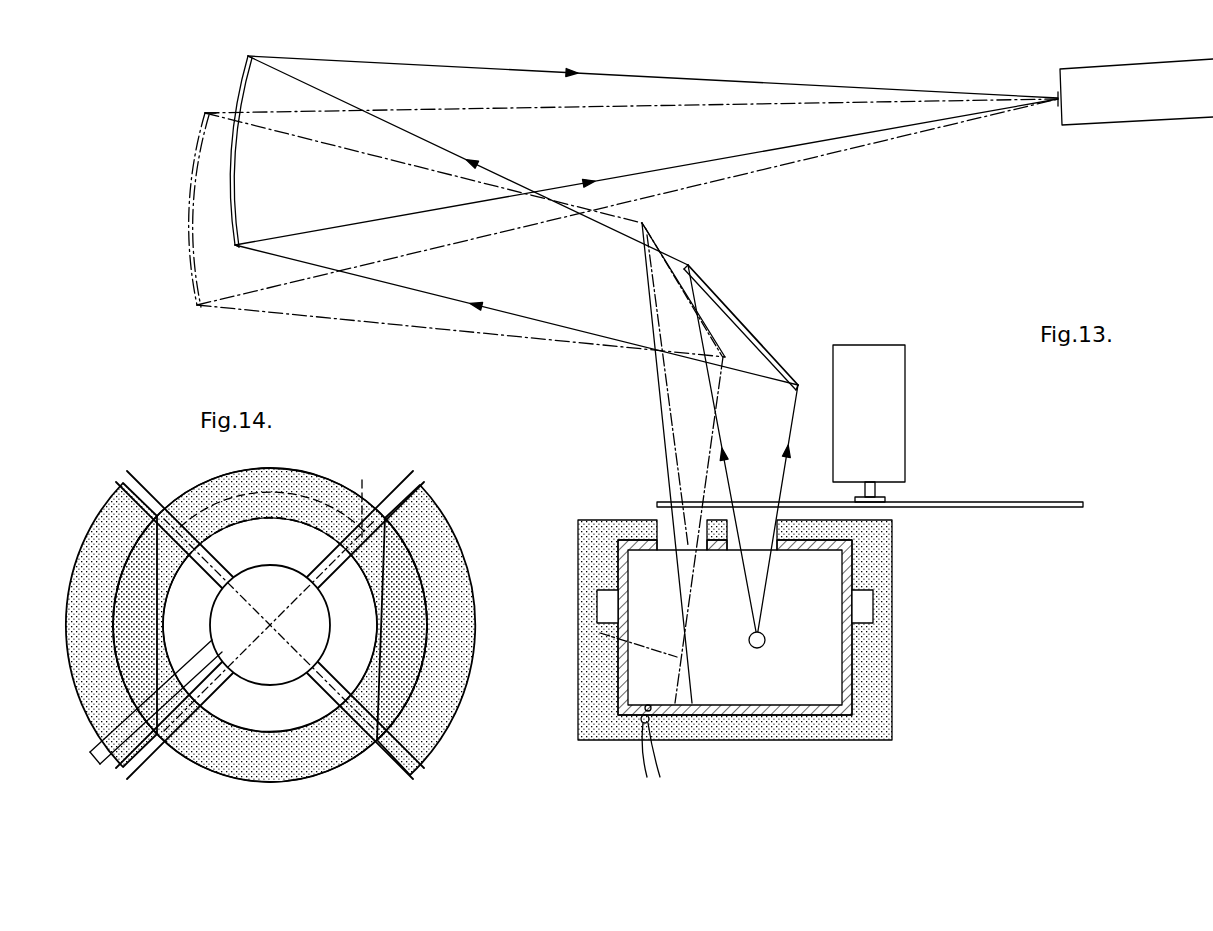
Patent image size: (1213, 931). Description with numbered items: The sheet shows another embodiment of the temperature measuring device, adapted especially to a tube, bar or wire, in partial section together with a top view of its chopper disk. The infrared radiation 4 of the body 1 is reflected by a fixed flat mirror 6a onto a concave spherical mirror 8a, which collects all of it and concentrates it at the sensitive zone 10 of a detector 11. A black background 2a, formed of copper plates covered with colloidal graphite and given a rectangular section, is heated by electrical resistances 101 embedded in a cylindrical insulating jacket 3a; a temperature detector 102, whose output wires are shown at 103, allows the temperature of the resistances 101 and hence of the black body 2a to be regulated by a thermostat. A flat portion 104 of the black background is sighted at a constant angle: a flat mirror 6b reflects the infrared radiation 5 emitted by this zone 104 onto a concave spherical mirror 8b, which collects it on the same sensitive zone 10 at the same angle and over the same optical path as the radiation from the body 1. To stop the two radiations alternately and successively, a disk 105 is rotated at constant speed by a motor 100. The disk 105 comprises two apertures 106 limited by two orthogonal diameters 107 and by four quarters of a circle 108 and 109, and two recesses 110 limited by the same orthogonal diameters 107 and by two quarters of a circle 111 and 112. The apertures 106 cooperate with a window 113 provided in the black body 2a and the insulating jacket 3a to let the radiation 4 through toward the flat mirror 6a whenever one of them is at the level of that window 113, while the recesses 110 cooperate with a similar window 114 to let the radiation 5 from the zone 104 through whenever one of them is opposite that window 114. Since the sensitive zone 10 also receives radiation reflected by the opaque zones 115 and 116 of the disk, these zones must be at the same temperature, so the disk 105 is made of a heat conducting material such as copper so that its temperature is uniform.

In FIG. 13, the body 1 is at (765, 640).
In FIG. 13, the black background 2a is at (848, 563).
In FIG. 13, the cylindrical insulating jacket 3a is at (870, 544).
In FIG. 13, the infrared radiation 4 is at (787, 476).
In FIG. 13, the infrared radiation 5 is at (627, 640).
In FIG. 13, the fixed flat mirror 6a is at (728, 306).
In FIG. 13, the flat mirror 6b is at (652, 232).
In FIG. 13, the concave spherical mirror 8a is at (236, 98).
In FIG. 13, the concave spherical mirror 8b is at (193, 162).
In FIG. 13, the sensitive zone 10 is at (1057, 101).
In FIG. 13, the detector 11 is at (1146, 100).
In FIG. 13, the motor 100 is at (864, 362).
In FIG. 13, the electrical resistances 101 is at (607, 610).
In FIG. 13, the temperature detector 102 is at (650, 711).
In FIG. 13, the output wires 103 is at (650, 764).
In FIG. 13, the portion of the black background 104 is at (683, 703).
In FIG. 13, the disk 105 is at (966, 500).
In FIG. 14, the disk 105 is at (421, 480).
In FIG. 13, the apertures 106 is at (750, 503).
In FIG. 14, the apertures 106 is at (345, 673).
In FIG. 14, the orthogonal diameters 107 is at (362, 481).
In FIG. 14, the quarter of a circle 108 is at (104, 745).
In FIG. 14, the quarter of a circle 109 is at (327, 600).
In FIG. 13, the recesses 110 is at (667, 503).
In FIG. 14, the recesses 110 is at (182, 475).
In FIG. 14, the quarter of a circle 111 is at (178, 752).
In FIG. 14, the quarter of a circle 112 is at (277, 470).
In FIG. 13, the window 113 is at (760, 537).
In FIG. 13, the window 114 is at (665, 530).
In FIG. 14, the opaque zone 115 is at (125, 515).
In FIG. 14, the opaque zone 116 is at (240, 550).